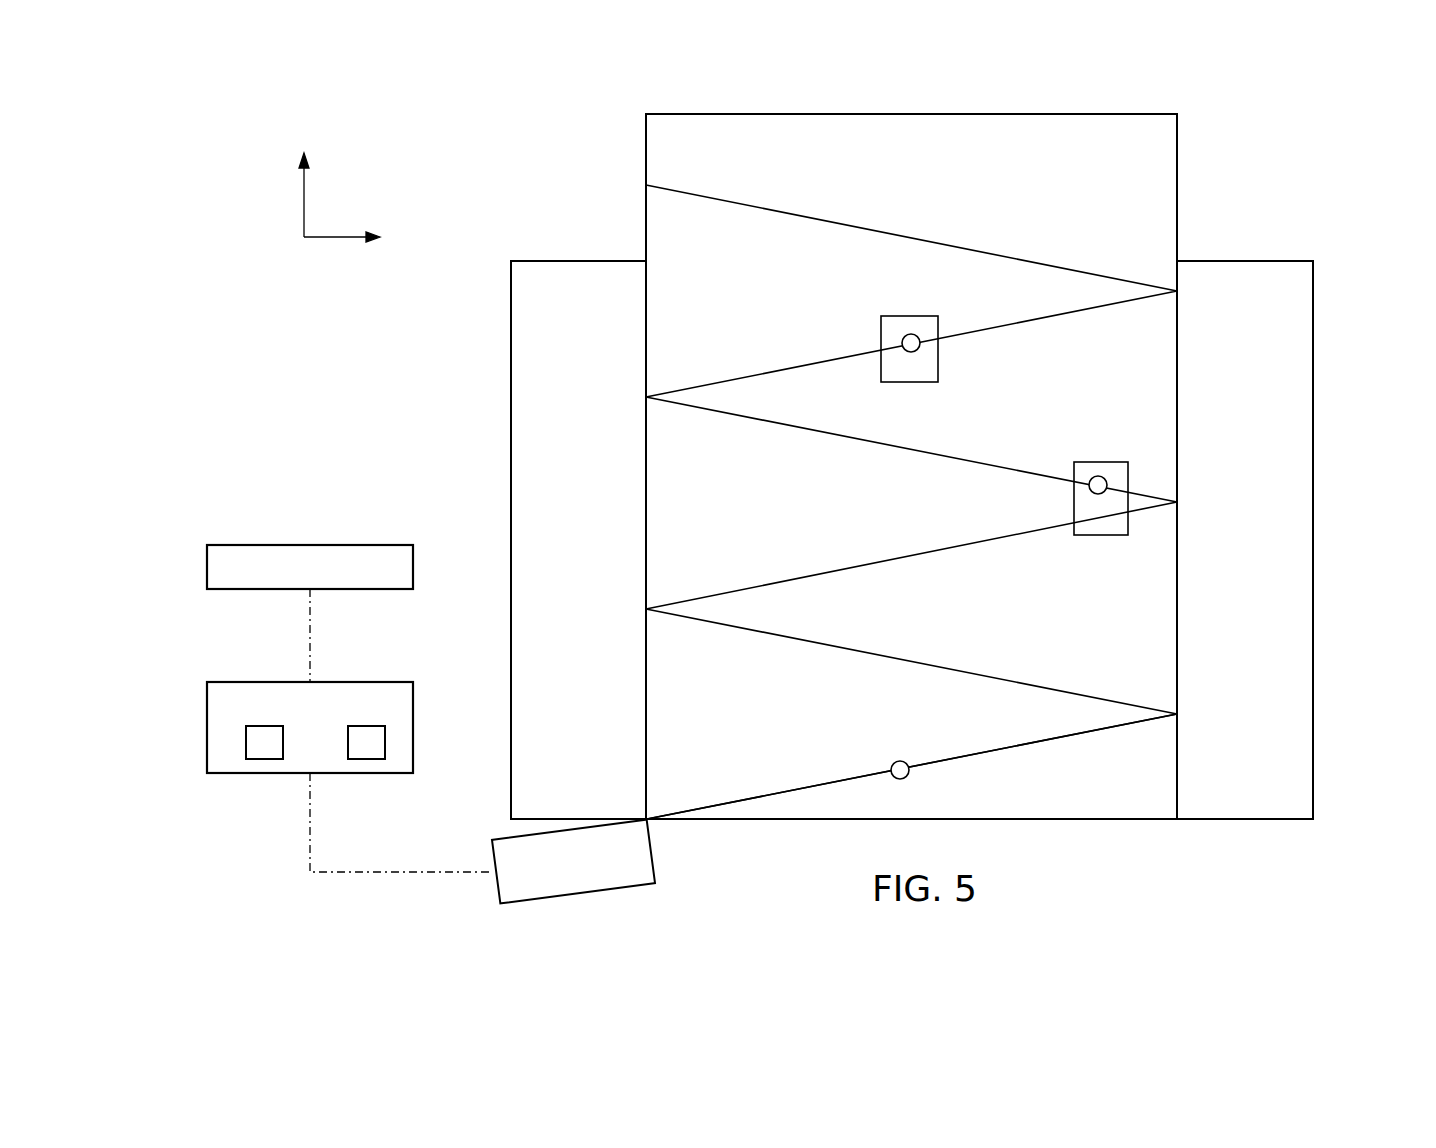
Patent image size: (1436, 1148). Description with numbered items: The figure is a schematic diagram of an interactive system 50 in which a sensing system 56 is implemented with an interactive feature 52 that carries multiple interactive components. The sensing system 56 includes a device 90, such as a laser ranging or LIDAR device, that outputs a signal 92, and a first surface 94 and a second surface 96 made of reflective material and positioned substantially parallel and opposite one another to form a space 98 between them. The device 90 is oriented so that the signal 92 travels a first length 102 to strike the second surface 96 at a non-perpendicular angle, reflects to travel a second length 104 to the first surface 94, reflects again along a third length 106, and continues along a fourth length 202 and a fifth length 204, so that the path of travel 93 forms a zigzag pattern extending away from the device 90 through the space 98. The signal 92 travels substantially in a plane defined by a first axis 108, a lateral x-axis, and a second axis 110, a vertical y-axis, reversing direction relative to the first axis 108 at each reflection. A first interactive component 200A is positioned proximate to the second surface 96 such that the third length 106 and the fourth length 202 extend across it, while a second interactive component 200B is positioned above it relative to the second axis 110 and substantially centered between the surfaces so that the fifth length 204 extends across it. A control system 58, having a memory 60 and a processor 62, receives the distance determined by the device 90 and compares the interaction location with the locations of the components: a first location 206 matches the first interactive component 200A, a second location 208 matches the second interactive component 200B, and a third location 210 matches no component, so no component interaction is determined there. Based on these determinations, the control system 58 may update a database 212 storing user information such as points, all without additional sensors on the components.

The interactive system 50 is at (1001, 455).
The interactive feature 52 is at (1177, 205).
The first surface 94 is at (511, 344).
The second surface 96 is at (1313, 398).
The second axis 110 is at (304, 200).
The first axis 108 is at (336, 238).
The fifth length 204 is at (1050, 312).
The fourth length 202 is at (870, 440).
The third length 106 is at (918, 553).
The second length 104 is at (905, 663).
The signal 92 is at (753, 797).
The first length 102 is at (972, 757).
The third location 210 is at (893, 764).
The second interactive component 200B is at (910, 316).
The second location 208 is at (902, 340).
The first interactive component 200A is at (1100, 462).
The first location 206 is at (1090, 494).
The path of travel 93 is at (1104, 766).
The space 98 is at (1087, 838).
The sensing system 56 is at (1242, 838).
The database 212 is at (250, 545).
The control system 58 is at (413, 698).
The memory 60 is at (263, 759).
The processor 62 is at (365, 759).
The device 90 is at (496, 838).